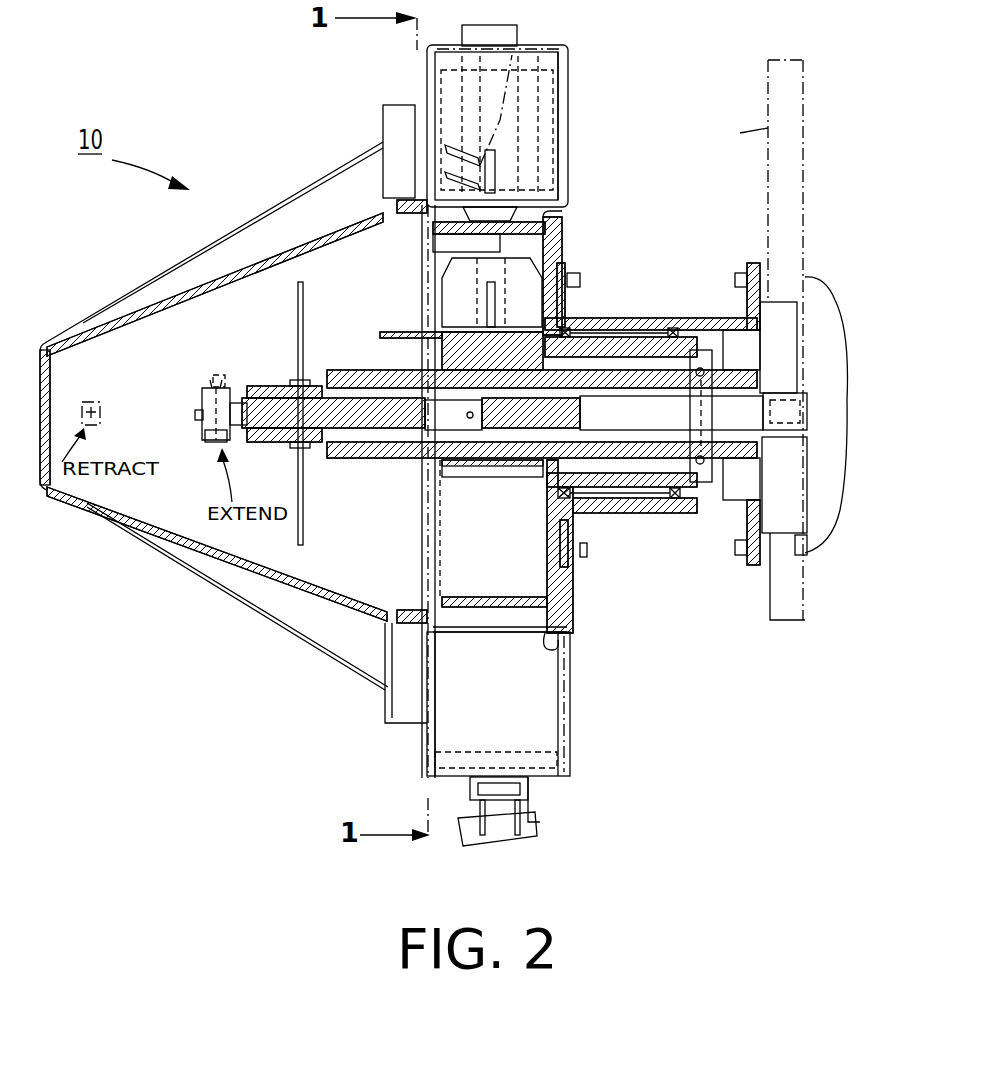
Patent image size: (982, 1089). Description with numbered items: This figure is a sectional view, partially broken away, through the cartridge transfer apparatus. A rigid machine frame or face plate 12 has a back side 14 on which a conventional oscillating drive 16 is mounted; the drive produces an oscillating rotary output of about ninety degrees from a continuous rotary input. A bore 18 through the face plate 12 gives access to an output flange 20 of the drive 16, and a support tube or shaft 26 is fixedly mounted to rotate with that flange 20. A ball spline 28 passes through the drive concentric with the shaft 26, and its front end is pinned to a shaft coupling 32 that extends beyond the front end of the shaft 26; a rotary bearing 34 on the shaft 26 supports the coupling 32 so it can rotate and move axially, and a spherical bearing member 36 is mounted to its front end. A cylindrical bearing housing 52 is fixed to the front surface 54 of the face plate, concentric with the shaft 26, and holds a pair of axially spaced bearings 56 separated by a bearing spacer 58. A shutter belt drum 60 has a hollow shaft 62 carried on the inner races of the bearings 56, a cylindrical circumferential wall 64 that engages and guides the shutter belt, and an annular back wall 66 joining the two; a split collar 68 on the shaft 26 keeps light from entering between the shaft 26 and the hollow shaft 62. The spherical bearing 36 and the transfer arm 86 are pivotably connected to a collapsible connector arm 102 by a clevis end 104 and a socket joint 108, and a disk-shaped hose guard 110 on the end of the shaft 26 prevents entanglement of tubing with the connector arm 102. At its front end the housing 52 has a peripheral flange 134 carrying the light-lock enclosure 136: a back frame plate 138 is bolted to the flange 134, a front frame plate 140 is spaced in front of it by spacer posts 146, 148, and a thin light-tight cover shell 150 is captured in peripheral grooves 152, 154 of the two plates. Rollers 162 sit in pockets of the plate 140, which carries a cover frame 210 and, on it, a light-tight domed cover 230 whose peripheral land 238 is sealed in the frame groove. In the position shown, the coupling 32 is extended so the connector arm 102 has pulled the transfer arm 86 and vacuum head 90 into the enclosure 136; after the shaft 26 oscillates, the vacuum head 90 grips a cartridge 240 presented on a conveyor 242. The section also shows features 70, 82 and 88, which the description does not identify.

The face plate 12 is at (787, 163).
The back side 14 is at (805, 228).
The oscillating drive 16 is at (822, 340).
The bore 18 is at (797, 558).
The output flange 20 is at (785, 460).
The support tube or shaft 26 is at (352, 450).
The ball spline 28 is at (787, 415).
The shaft coupling 32 is at (358, 372).
The rotary bearing 34 is at (283, 382).
The spherical bearing member 36 is at (218, 375).
The cylindrical bearing housing 52 is at (638, 318).
The front surface 54 is at (767, 125).
The bearings 56 is at (577, 503).
The bearing spacer 58 is at (600, 317).
The shutter belt drum 60 is at (562, 215).
The hollow shaft 62 is at (648, 340).
The cylindrical circumferential wall 64 is at (483, 595).
The annular back wall 66 is at (547, 545).
The split collar 68 is at (703, 484).
The support block 70 is at (447, 340).
The gear 82 is at (513, 273).
The transfer arm 86 is at (528, 170).
The gear body 88 is at (470, 258).
The vacuum head 90 is at (512, 35).
The collapsible connector arm 102 is at (202, 400).
The clevis end 104 is at (548, 114).
The socket joint 108 is at (205, 442).
The hose guard 110 is at (306, 530).
The peripheral flange 134 is at (577, 568).
The light-lock enclosure 136 is at (580, 686).
The back frame plate 138 is at (567, 612).
The front frame plate 140 is at (430, 692).
The spacer post 146 is at (560, 80).
The spacer post 148 is at (562, 750).
The cover shell 150 is at (507, 635).
The peripheral groove 152 is at (388, 657).
The peripheral groove 154 is at (565, 645).
The rollers 162 is at (575, 52).
The cover frame 210 is at (428, 600).
The domed cover 230 is at (70, 492).
The peripheral land 238 is at (400, 610).
The cartridge 240 is at (468, 793).
The conveyor 242 is at (527, 822).